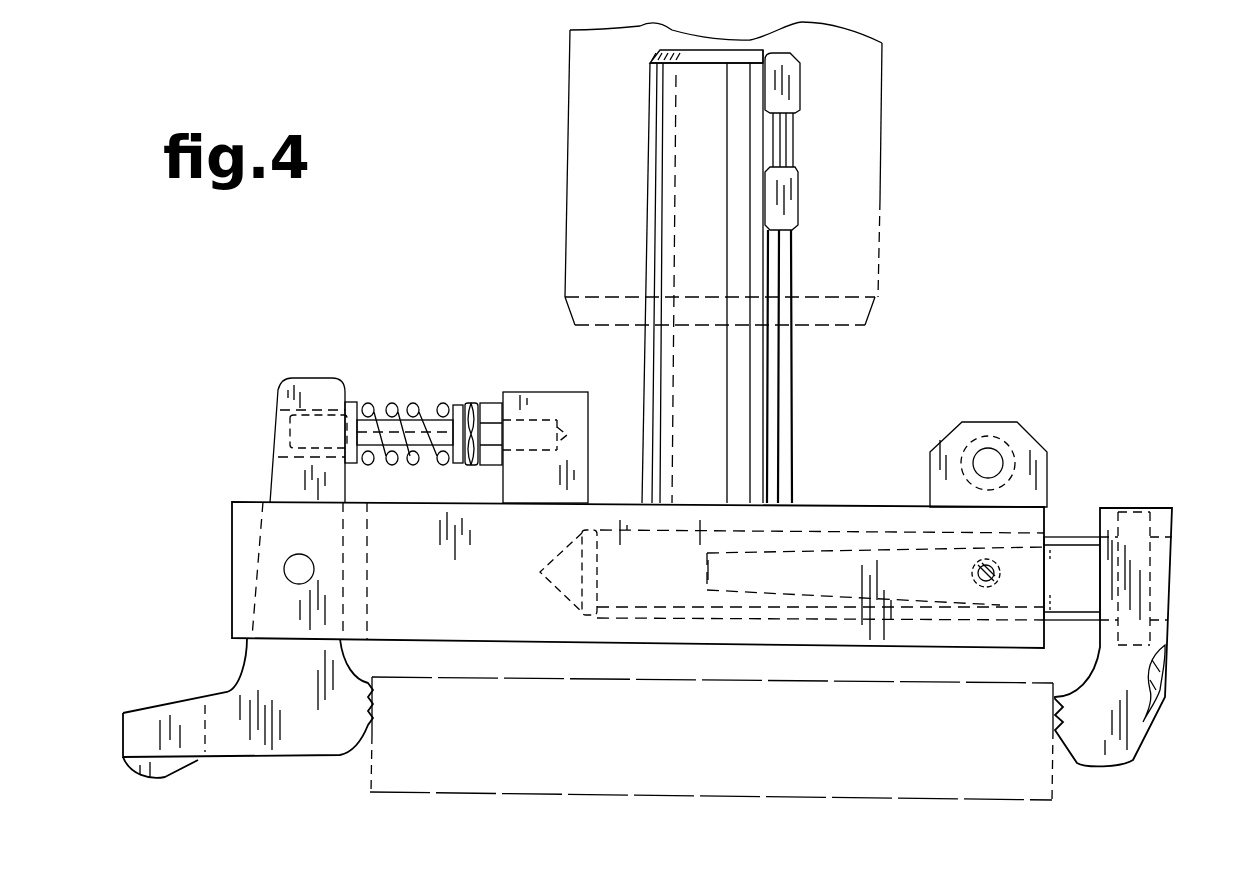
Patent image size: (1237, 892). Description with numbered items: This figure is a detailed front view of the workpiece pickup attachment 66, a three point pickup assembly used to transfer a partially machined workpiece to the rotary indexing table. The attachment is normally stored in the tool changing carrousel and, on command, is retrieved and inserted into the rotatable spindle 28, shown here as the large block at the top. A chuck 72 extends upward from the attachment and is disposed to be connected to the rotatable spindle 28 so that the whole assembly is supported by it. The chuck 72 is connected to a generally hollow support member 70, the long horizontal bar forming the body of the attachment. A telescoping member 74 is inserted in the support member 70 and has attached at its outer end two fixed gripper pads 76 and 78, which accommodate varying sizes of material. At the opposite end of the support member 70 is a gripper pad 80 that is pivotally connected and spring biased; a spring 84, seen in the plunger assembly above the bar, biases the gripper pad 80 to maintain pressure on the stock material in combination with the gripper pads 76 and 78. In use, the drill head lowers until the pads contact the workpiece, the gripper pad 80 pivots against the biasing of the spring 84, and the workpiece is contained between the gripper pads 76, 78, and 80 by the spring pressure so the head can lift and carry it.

The rotatable spindle 28 is at (880, 212).
The workpiece pickup attachment 66 is at (1004, 265).
The support member 70 is at (856, 504).
The chuck 72 is at (792, 383).
The telescoping member 74 is at (1065, 537).
The gripper pad 76 is at (1163, 672).
The gripper pad 78 is at (1147, 730).
The gripper pad 80 is at (228, 690).
The spring 84 is at (418, 410).